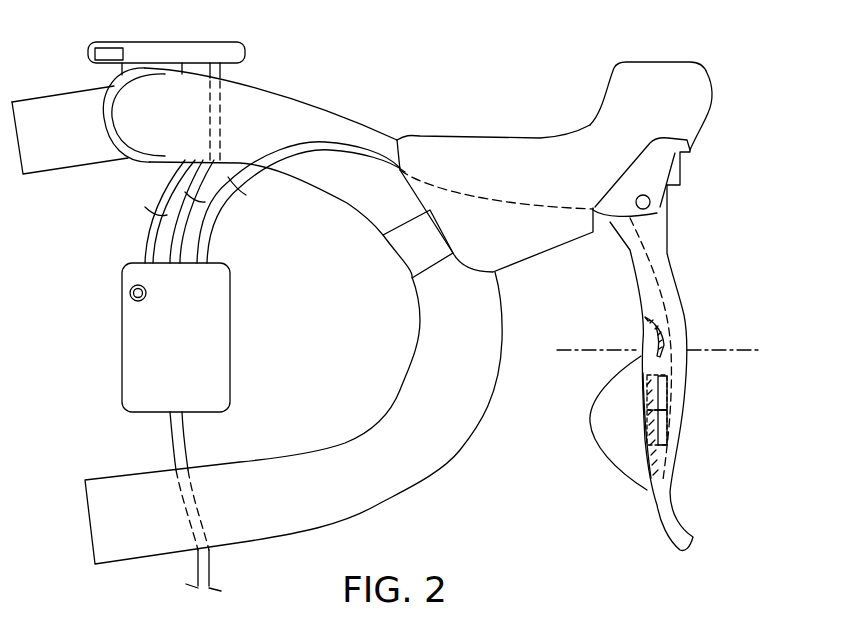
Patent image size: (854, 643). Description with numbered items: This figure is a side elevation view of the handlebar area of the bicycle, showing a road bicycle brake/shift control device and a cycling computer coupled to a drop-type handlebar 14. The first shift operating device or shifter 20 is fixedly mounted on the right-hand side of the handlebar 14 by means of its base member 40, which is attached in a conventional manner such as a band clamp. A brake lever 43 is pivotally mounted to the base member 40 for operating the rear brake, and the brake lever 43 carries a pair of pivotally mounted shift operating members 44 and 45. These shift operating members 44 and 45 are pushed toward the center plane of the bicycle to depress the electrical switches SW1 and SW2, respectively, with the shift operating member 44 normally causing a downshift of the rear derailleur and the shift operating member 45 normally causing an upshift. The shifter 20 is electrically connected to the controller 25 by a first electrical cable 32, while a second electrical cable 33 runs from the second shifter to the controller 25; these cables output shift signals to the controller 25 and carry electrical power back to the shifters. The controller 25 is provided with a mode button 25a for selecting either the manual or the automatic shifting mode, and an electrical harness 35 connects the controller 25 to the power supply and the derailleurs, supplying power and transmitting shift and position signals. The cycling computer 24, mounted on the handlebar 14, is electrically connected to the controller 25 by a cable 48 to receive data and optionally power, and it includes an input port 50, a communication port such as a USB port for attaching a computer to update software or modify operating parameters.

The handlebar 14 is at (341, 110).
The first shift operating device or shifter 20 is at (707, 74).
The cycling computer 24 is at (147, 48).
The controller 25 is at (122, 350).
The mode button 25a is at (128, 292).
The first electrical cable 32 is at (224, 204).
The second electrical cable 33 is at (147, 232).
The electrical harness 35 is at (170, 442).
The base member 40 is at (456, 137).
The brake lever 43 is at (675, 292).
The shift operating member 44 is at (620, 441).
The shift operating member 45 is at (655, 342).
The cable 48 is at (193, 237).
The input port 50 is at (100, 53).
The electrical switch SW1 is at (678, 442).
The electrical switch SW2 is at (680, 393).